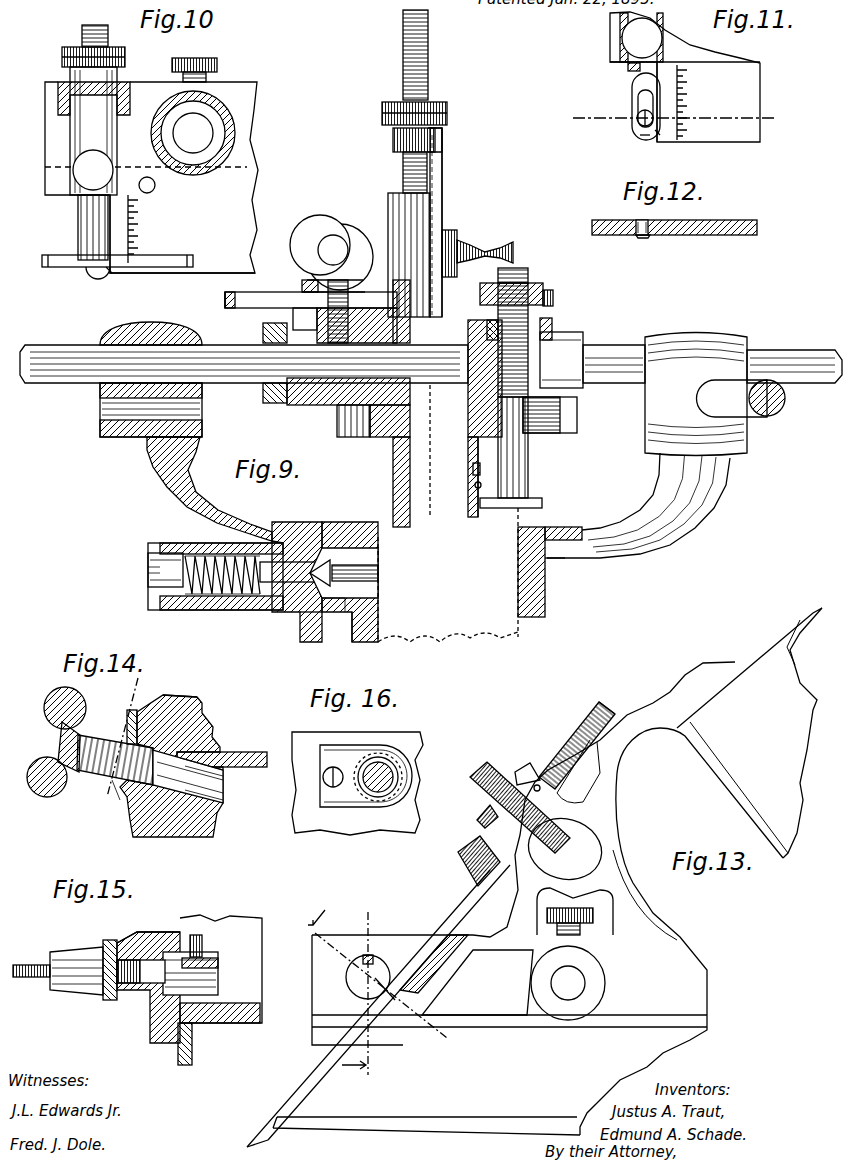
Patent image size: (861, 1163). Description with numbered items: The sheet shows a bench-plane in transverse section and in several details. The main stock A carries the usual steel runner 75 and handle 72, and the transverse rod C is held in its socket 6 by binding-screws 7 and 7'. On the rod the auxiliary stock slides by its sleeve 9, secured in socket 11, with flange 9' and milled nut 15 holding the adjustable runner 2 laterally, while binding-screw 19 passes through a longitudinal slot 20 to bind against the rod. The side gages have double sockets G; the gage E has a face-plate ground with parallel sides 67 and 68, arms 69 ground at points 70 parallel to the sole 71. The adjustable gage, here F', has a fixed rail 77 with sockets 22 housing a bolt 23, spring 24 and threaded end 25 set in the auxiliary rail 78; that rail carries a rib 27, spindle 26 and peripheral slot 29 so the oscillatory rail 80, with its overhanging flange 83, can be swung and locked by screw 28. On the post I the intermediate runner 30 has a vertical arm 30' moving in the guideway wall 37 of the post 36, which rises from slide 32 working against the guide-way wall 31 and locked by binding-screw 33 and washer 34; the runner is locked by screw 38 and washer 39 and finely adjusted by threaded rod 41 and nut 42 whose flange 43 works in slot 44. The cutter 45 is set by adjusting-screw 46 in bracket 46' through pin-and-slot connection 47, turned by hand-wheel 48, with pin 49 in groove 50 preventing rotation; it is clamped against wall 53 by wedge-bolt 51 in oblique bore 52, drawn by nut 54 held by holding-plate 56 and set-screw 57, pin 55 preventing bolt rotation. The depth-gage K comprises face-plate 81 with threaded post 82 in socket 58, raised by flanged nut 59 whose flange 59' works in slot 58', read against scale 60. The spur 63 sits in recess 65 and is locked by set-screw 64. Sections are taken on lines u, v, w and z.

In FIG. 9, the adjustable blade or runner 2 is at (393, 480).
In FIG. 10, the socket 6 is at (212, 108).
In FIG. 9, the socket 6 is at (561, 360).
In FIG. 13, the binding-screw 7 is at (577, 918).
In FIG. 10, the binding-screw 7' is at (204, 64).
In FIG. 9, the binding-screw 7' is at (569, 289).
In FIG. 9, the sleeve 9 is at (348, 402).
In FIG. 9, the flange 9' is at (449, 451).
In FIG. 9, the socket 11 is at (365, 410).
In FIG. 9, the milled nut 15 is at (275, 403).
In FIG. 9, the binding-screw 19 is at (320, 245).
In FIG. 9, the longitudinal slot 20 is at (355, 330).
In FIG. 9, the socket 22 is at (240, 600).
In FIG. 9, the bolt 23 is at (160, 580).
In FIG. 9, the coiled spring 24 is at (215, 590).
In FIG. 9, the screw-threaded end 25 is at (290, 585).
In FIG. 9, the rod or spindle 26 is at (310, 612).
In FIG. 9, the semi-circular rib 27 is at (370, 556).
In FIG. 9, the screw 28 is at (378, 573).
In FIG. 9, the peripheral slot 29 is at (345, 590).
In FIG. 9, the intermediate blade or runner 30 is at (458, 465).
In FIG. 9, the vertical arm 30' is at (464, 222).
In FIG. 9, the lower wall of guide-way 31 is at (300, 318).
In FIG. 9, the slide 32 is at (248, 303).
In FIG. 9, the binding-screw 33 is at (322, 228).
In FIG. 9, the washer 34 is at (303, 283).
In FIG. 9, the post or bracket 36 is at (405, 203).
In FIG. 9, the inner wall of vertical guideway 37 is at (436, 210).
In FIG. 9, the binding-screw 38 is at (490, 250).
In FIG. 9, the washer 39 is at (452, 232).
In FIG. 9, the threaded rod or spindle 41 is at (428, 65).
In FIG. 9, the nut 42 is at (440, 104).
In FIG. 9, the flange 43 is at (393, 145).
In FIG. 9, the slot or recess 44 is at (440, 140).
In FIG. 14, the cutter 45 is at (248, 747).
In FIG. 15, the cutter 45 is at (250, 912).
In FIG. 13, the cutter 45 is at (445, 925).
In FIG. 13, the adjusting-screw 46 is at (577, 745).
In FIG. 13, the bracket 46' is at (469, 815).
In FIG. 13, the pin-and-slot connection 47 is at (482, 880).
In FIG. 13, the hand-wheel 48 is at (484, 770).
In FIG. 13, the pin 49 is at (536, 785).
In FIG. 13, the longitudinal slot or groove 50 is at (607, 711).
In FIG. 14, the clamping wedge-bolt 51 is at (163, 783).
In FIG. 15, the clamping wedge-bolt 51 is at (148, 975).
In FIG. 16, the clamping wedge-bolt 51 is at (372, 753).
In FIG. 14, the bore 52 is at (205, 726).
In FIG. 15, the bore 52 is at (170, 932).
In FIG. 13, the rear wall of cutter-slot 53 is at (318, 1080).
In FIG. 14, the nut 54 is at (88, 740).
In FIG. 15, the nut 54 is at (70, 952).
In FIG. 16, the nut 54 is at (393, 777).
In FIG. 15, the pin 55 is at (197, 935).
In FIG. 14, the holding-plate 56 is at (132, 712).
In FIG. 15, the holding-plate 56 is at (110, 940).
In FIG. 16, the holding-plate 56 is at (348, 797).
In FIG. 16, the set-screw 57 is at (330, 786).
In FIG. 10, the socket 58 is at (70, 131).
In FIG. 9, the socket 58 is at (544, 340).
In FIG. 9, the transverse slot or groove 58' is at (473, 319).
In FIG. 10, the flanged nut 59 is at (106, 57).
In FIG. 9, the flanged nut 59 is at (529, 283).
In FIG. 10, the flange 59' is at (78, 88).
In FIG. 9, the flange 59' is at (564, 315).
In FIG. 10, the scale 60 is at (138, 220).
In FIG. 11, the scale 60 is at (680, 98).
In FIG. 10, the spur 63 is at (98, 279).
In FIG. 11, the spur 63 is at (645, 135).
In FIG. 12, the spur 63 is at (642, 237).
In FIG. 9, the spur 63 is at (473, 468).
In FIG. 11, the conical-headed set-screw 64 is at (638, 123).
In FIG. 12, the conical-headed set-screw 64 is at (642, 222).
In FIG. 9, the conical-headed set-screw 64 is at (474, 486).
In FIG. 11, the vertical recess 65 is at (655, 75).
In FIG. 9, the parallel side of rail 67 is at (518, 578).
In FIG. 9, the parallel side of rail 68 is at (545, 587).
In FIG. 9, the arm 69 is at (655, 530).
In FIG. 9, the ground point 70 is at (575, 559).
In FIG. 9, the sole 71 is at (532, 617).
In FIG. 13, the handle 72 is at (749, 733).
In FIG. 10, the steel blade or runner 75 is at (182, 234).
In FIG. 11, the steel blade or runner 75 is at (697, 102).
In FIG. 12, the steel blade or runner 75 is at (728, 218).
In FIG. 9, the steel blade or runner 75 is at (468, 448).
In FIG. 15, the steel blade or runner 75 is at (192, 1040).
In FIG. 13, the steel blade or runner 75 is at (426, 1103).
In FIG. 9, the main or fixed rail 77 is at (272, 538).
In FIG. 9, the auxiliary rail 78 is at (340, 620).
In FIG. 9, the oscillatory rail 80 is at (352, 525).
In FIG. 10, the face-plate 81 is at (160, 257).
In FIG. 9, the face-plate 81 is at (540, 500).
In FIG. 10, the screw-threaded portion 82 is at (95, 25).
In FIG. 9, the screw-threaded portion 82 is at (525, 272).
In FIG. 9, the overhanging flange 83 is at (285, 525).
In FIG. 10, the main stock A is at (151, 177).
In FIG. 11, the main stock A is at (685, 77).
In FIG. 9, the main stock A is at (468, 337).
In FIG. 14, the main stock A is at (199, 712).
In FIG. 15, the main stock A is at (148, 932).
In FIG. 16, the main stock A is at (402, 738).
In FIG. 13, the main stock A is at (547, 898).
In FIG. 9, the rod or pin C is at (606, 358).
In FIG. 9, the end gage E is at (633, 496).
In FIG. 9, the arm F' is at (209, 489).
In FIG. 9, the double sleeve or socket G is at (155, 330).
In FIG. 9, the post I is at (295, 300).
In FIG. 10, the depth-gage or stop K is at (78, 218).
In FIG. 9, the depth-gage or stop K is at (522, 465).
In FIG. 14, the section line u- u is at (117, 750).
In FIG. 13, the section line v- v is at (373, 980).
In FIG. 13, the section line w- w is at (358, 991).
In FIG. 11, the section line z- z is at (675, 118).